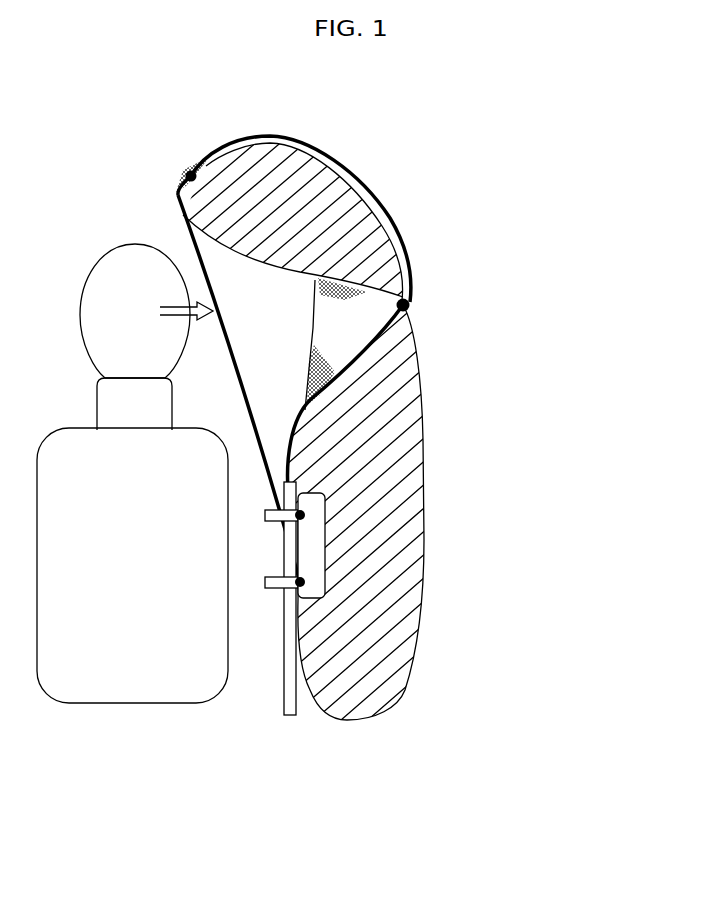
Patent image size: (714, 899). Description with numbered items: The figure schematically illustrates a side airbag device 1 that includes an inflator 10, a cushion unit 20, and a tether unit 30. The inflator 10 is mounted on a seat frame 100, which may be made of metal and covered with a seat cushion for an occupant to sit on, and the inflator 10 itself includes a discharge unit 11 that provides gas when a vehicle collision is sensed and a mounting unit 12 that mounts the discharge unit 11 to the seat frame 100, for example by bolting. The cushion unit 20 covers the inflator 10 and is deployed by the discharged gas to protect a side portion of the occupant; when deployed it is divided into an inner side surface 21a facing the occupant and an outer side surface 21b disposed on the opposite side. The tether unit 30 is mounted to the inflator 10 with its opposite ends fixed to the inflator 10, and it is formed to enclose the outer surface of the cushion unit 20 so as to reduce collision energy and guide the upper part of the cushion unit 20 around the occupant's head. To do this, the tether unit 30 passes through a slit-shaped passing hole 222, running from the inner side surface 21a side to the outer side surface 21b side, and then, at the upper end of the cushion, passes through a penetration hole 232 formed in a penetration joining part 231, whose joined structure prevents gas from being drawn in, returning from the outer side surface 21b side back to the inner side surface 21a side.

The side airbag device 1 is at (357, 449).
The inflator 10 is at (409, 665).
The discharge unit 11 is at (313, 563).
The mounting unit 12 is at (273, 582).
The cushion unit 20 is at (422, 410).
The inner side surface 21a is at (186, 229).
The outer side surface 21b is at (330, 162).
The tether unit 30 is at (399, 218).
The seat frame 100 is at (285, 714).
The passing hole 222 is at (409, 305).
The penetration joining part 231 is at (178, 180).
The penetration hole 232 is at (186, 160).